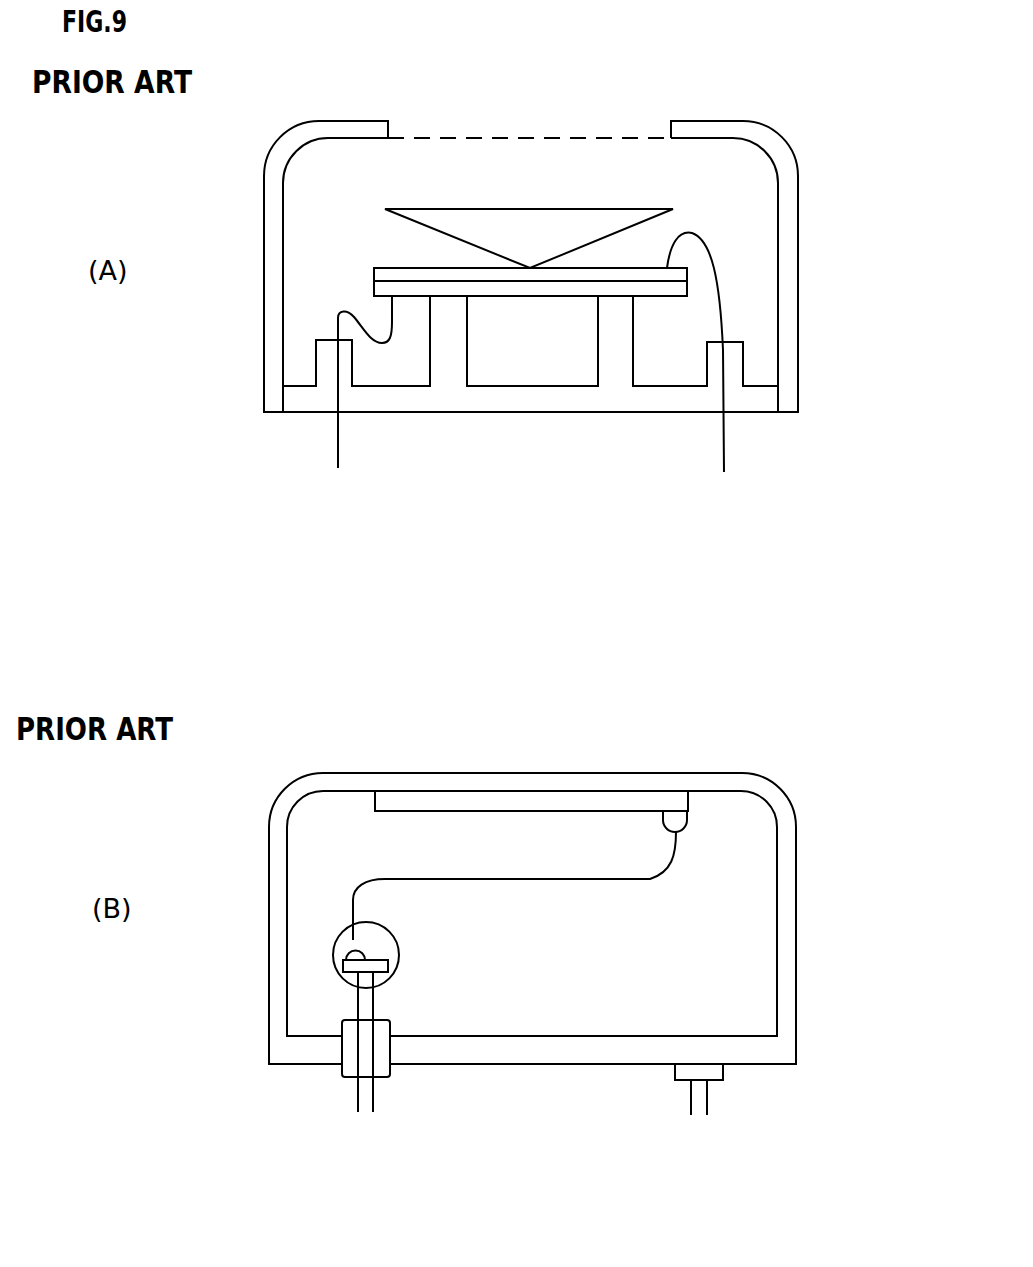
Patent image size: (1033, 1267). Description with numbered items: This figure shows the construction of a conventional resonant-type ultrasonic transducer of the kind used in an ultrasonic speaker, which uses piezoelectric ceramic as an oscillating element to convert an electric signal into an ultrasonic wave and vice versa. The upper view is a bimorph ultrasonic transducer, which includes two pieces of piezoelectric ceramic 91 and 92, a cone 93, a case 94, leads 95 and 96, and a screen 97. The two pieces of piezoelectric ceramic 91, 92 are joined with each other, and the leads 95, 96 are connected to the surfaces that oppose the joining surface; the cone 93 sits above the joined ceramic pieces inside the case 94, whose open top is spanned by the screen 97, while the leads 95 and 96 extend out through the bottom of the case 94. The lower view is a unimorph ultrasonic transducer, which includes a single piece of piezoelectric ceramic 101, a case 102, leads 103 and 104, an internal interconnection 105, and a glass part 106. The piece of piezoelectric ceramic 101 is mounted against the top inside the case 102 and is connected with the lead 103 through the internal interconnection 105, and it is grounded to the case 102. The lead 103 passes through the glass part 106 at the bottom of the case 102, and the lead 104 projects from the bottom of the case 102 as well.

The piezoelectric ceramic 91 is at (385, 268).
The piezoelectric ceramic 92 is at (374, 283).
The cone 93 is at (412, 208).
The case 94 is at (787, 142).
The lead 95 is at (724, 461).
The lead 96 is at (338, 460).
The screen 97 is at (566, 138).
The piezoelectric ceramic 101 is at (400, 790).
The case 102 is at (797, 868).
The lead 103 is at (358, 1095).
The lead 104 is at (700, 1102).
The internal interconnection 105 is at (350, 910).
The glass part 106 is at (382, 1073).